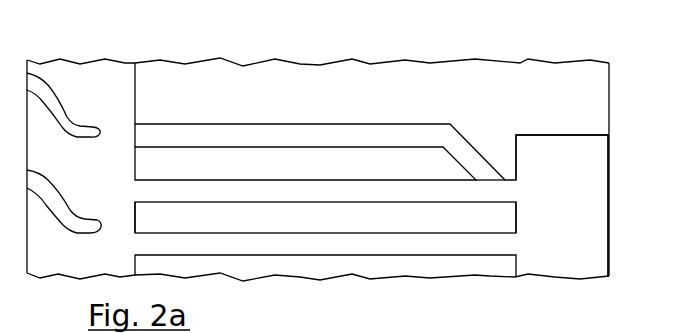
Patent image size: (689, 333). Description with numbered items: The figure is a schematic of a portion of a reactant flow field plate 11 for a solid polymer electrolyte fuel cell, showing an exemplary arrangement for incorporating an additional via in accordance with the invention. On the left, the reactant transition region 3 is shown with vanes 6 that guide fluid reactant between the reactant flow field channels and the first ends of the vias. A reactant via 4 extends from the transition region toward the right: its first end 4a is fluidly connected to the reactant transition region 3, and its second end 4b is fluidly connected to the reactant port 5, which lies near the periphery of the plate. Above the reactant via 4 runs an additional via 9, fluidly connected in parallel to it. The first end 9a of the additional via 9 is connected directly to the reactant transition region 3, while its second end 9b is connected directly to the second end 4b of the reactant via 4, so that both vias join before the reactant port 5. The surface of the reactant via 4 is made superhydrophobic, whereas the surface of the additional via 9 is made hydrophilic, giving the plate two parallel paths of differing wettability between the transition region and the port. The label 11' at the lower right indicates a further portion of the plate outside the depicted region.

The reactant transition region 3 is at (85, 255).
The reactant via 4 is at (265, 192).
The first end of reactant via 4a is at (130, 193).
The second end of reactant via 4b is at (510, 191).
The reactant port 5 is at (578, 243).
The vanes 6 is at (65, 118).
The additional via 9 is at (316, 134).
The first end of additional via 9a is at (133, 135).
The second end of additional via 9b is at (488, 178).
The reactant flow field plate 11 is at (343, 146).
The further layer 11' is at (645, 322).